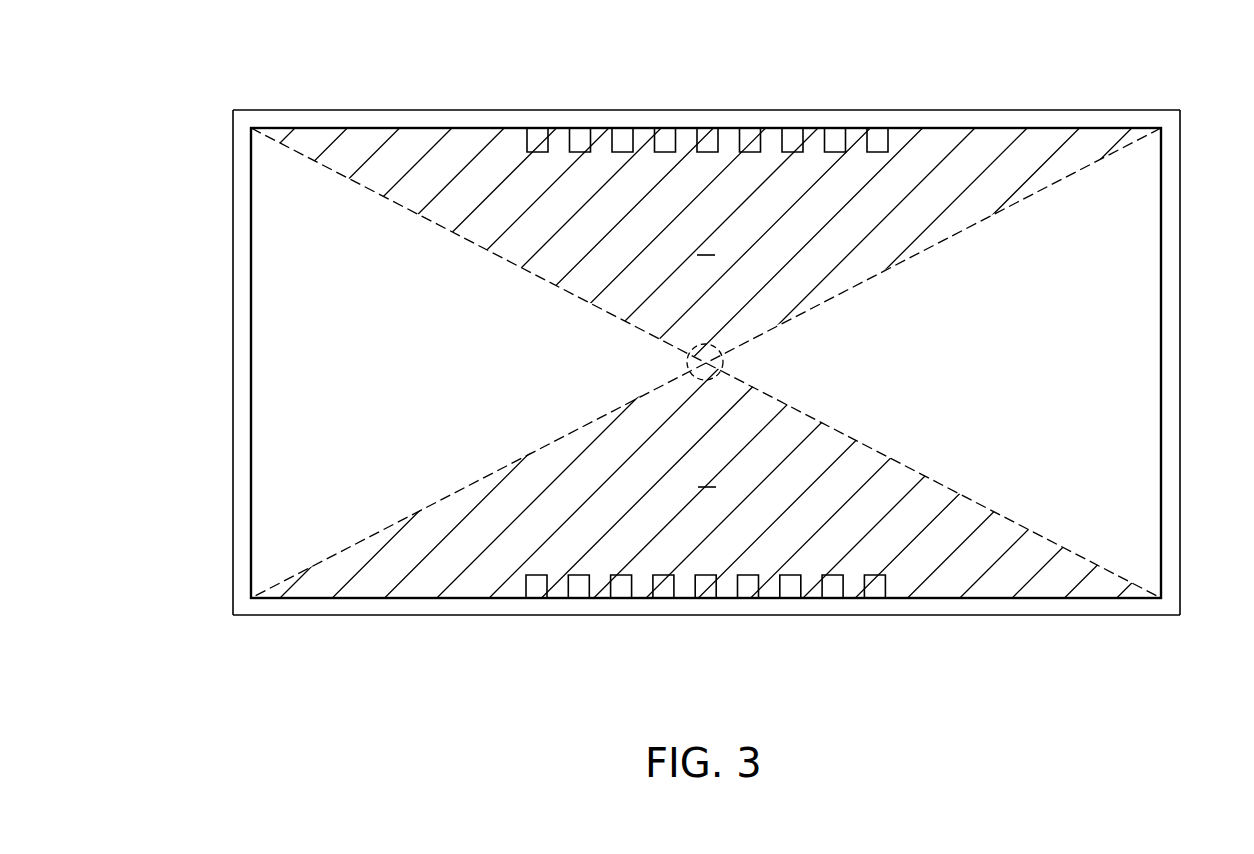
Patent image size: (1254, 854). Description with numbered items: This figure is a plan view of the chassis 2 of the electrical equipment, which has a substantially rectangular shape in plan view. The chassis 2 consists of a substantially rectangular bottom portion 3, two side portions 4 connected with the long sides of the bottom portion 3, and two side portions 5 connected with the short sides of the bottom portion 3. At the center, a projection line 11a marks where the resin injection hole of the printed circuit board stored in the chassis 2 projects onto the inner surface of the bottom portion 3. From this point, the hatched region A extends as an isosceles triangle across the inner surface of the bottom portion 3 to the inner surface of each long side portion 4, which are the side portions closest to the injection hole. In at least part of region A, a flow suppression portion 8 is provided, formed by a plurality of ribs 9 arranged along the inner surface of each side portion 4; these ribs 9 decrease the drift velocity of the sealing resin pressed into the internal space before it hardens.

The chassis 2 is at (1060, 108).
The bottom portion 3 is at (1082, 462).
The side portions 4 is at (476, 119).
The side portions 5 is at (240, 363).
The flow suppression portion 8 is at (517, 55).
The ribs 9 is at (540, 140).
The projection line 11a is at (723, 362).